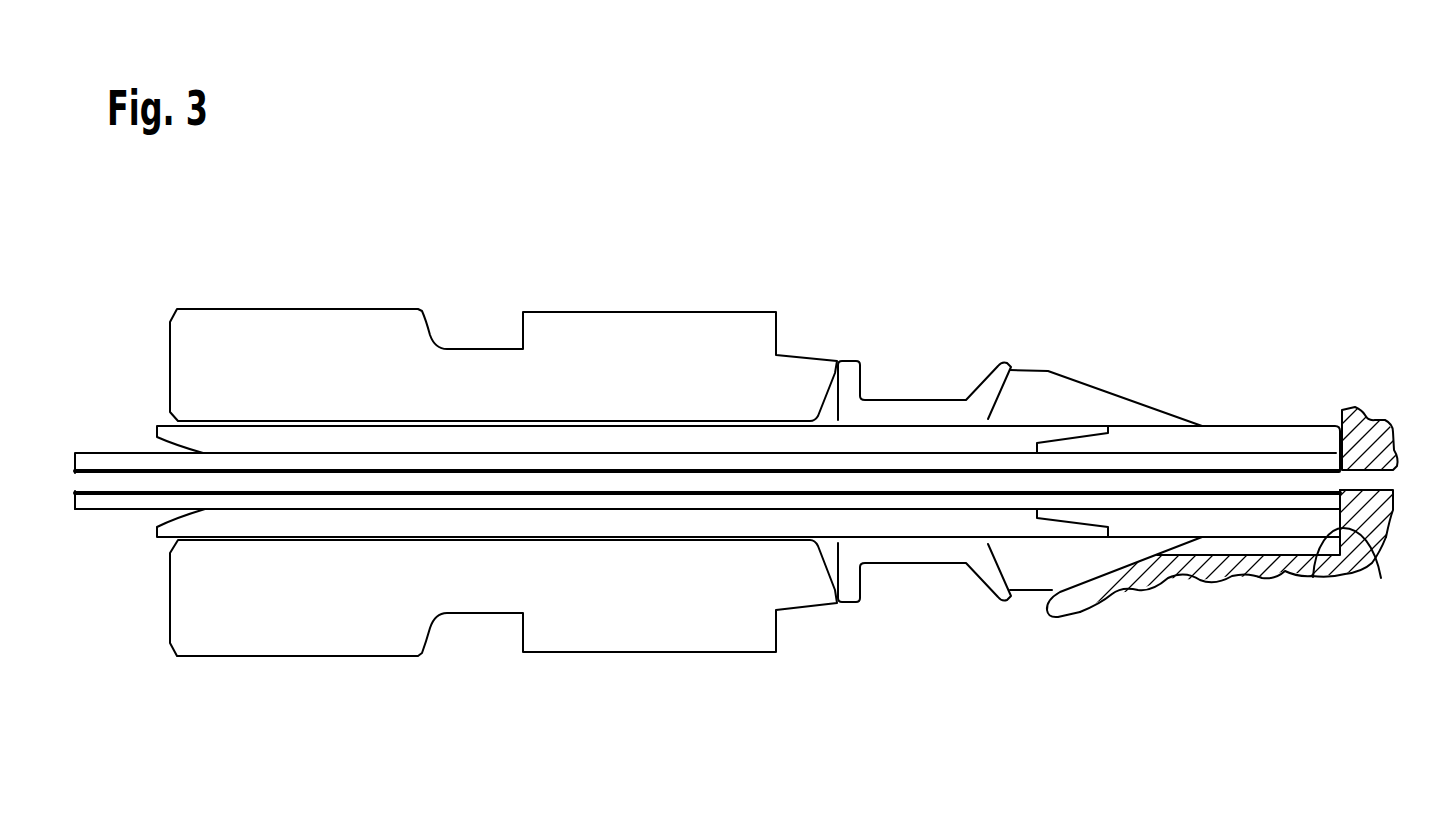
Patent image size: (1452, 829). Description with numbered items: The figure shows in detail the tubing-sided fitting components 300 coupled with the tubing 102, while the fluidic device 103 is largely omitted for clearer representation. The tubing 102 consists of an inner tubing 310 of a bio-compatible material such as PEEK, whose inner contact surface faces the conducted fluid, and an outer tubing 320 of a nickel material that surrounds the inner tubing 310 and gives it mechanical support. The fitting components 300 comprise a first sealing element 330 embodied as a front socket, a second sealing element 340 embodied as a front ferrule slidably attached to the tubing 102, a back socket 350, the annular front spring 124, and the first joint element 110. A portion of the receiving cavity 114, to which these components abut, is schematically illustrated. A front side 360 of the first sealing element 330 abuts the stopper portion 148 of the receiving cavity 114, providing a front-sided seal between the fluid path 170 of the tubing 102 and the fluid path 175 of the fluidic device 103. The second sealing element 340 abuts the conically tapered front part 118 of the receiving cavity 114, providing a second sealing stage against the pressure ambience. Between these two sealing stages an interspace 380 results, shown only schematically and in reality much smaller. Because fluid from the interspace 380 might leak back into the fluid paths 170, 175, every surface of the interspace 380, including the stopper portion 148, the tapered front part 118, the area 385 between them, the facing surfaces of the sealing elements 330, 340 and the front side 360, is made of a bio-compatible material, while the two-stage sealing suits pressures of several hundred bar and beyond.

The fitting components 300 is at (1203, 169).
The first joint element 110 is at (737, 333).
The fluid path 170 is at (857, 485).
The annular front spring 124 is at (992, 373).
The second sealing element 340 is at (1088, 410).
The first sealing element 330 is at (1236, 443).
The fluid path 175 is at (1377, 482).
The outer tubing 320 is at (105, 462).
The inner tubing 310 is at (92, 474).
The tubing 102 is at (138, 500).
The back socket 350 is at (917, 520).
The receiving cavity 114 is at (1029, 608).
The conically tapered front part 118 is at (1113, 587).
The interspace 380 is at (1207, 580).
The area 385 is at (1285, 577).
The front side 360 is at (1320, 560).
The stopper portion 148 is at (1388, 540).
The fluidic device 103 is at (1237, 665).